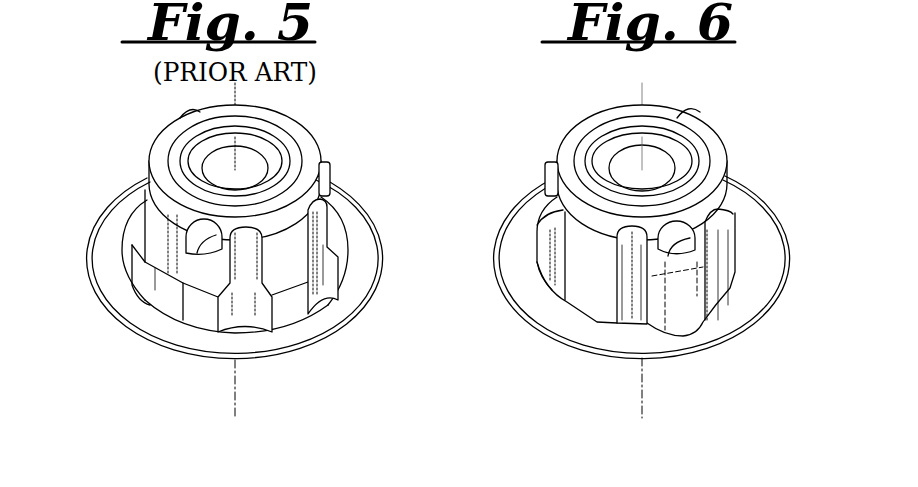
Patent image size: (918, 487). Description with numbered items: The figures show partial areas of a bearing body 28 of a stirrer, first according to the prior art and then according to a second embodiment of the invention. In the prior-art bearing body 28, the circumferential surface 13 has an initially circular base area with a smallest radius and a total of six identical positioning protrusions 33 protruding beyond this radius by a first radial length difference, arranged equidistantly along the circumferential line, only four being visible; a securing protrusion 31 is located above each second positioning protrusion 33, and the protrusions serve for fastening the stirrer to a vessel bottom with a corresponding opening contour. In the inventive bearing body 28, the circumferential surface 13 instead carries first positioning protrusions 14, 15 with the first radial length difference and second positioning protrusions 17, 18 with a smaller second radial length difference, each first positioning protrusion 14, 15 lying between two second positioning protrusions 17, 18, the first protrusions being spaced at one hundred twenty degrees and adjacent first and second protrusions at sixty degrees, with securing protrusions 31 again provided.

In FIG. 5, the circumferential surface 13 is at (290, 258).
In FIG. 6, the circumferential surface 13 is at (590, 243).
In FIG. 6, the first positioning protrusion 14 is at (538, 257).
In FIG. 6, the first positioning protrusion 15 is at (680, 322).
In FIG. 6, the second positioning protrusion 17 is at (590, 305).
In FIG. 6, the second positioning protrusion 18 is at (733, 268).
In FIG. 5, the bearing body 28 is at (145, 318).
In FIG. 6, the bearing body 28 is at (738, 307).
In FIG. 5, the securing protrusion 31 is at (187, 115).
In FIG. 6, the securing protrusion 31 is at (550, 163).
In FIG. 5, the positioning protrusion 33 is at (132, 283).